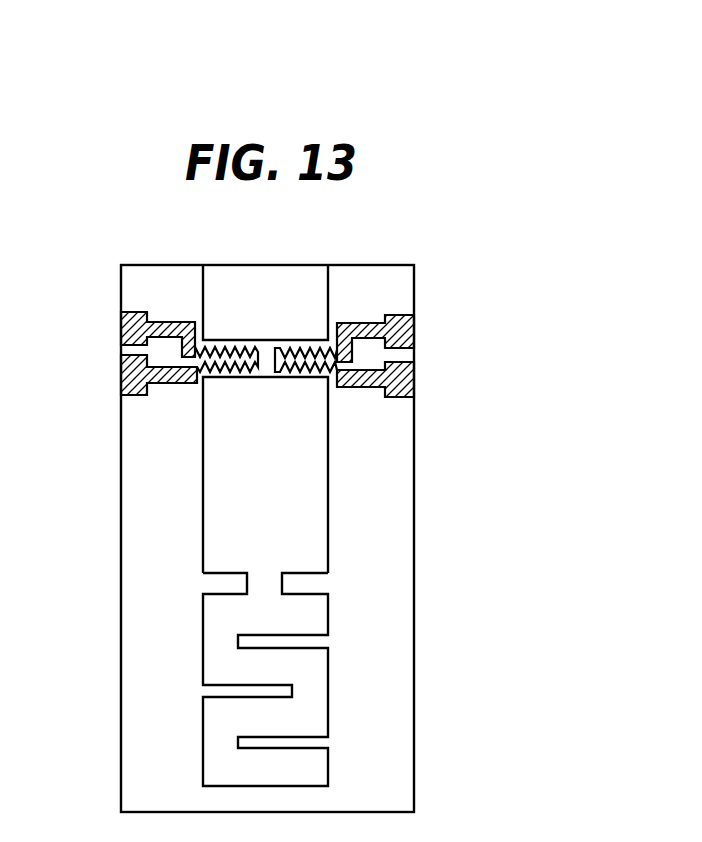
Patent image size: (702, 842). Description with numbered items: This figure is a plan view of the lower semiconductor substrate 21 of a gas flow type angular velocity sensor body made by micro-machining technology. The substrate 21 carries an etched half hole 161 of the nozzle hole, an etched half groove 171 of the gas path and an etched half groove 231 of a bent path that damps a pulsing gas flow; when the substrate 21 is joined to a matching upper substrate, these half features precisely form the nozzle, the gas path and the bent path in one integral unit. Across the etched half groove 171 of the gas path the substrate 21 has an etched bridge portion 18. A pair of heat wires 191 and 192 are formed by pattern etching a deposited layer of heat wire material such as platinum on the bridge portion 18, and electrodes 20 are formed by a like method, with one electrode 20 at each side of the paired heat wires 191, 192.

The bridge portion 18 is at (291, 340).
The electrodes 20 is at (121, 328).
The lower semiconductor substrate 21 is at (397, 470).
The etched half hole 161 is at (265, 578).
The etched half groove of gas path 171 is at (212, 503).
The heat wire 191 is at (228, 368).
The heat wire 192 is at (312, 368).
The etched half groove of bent path 231 is at (215, 716).